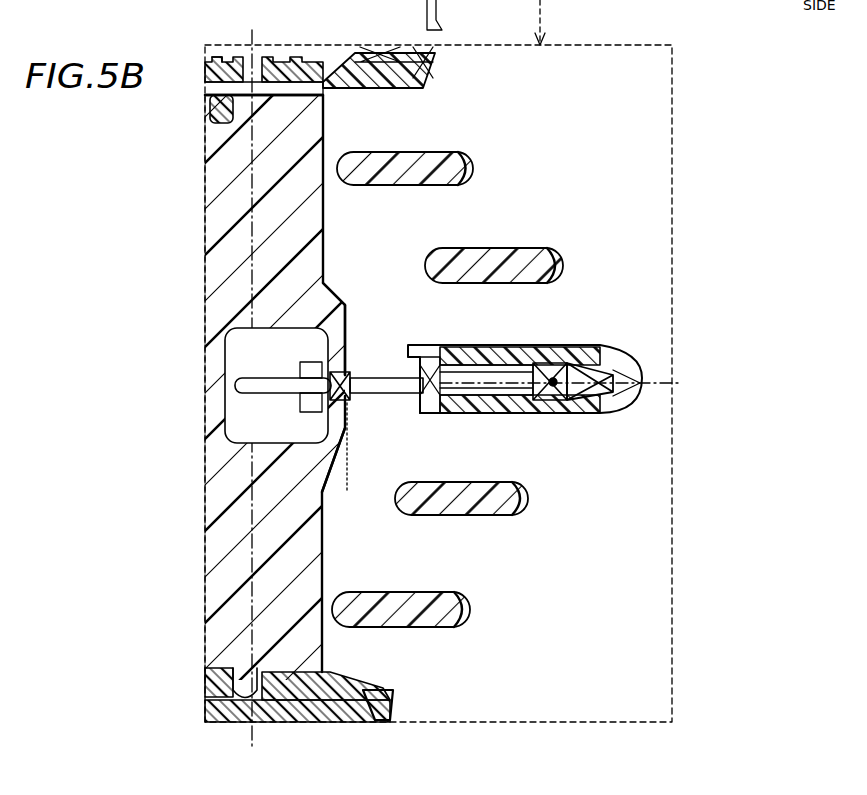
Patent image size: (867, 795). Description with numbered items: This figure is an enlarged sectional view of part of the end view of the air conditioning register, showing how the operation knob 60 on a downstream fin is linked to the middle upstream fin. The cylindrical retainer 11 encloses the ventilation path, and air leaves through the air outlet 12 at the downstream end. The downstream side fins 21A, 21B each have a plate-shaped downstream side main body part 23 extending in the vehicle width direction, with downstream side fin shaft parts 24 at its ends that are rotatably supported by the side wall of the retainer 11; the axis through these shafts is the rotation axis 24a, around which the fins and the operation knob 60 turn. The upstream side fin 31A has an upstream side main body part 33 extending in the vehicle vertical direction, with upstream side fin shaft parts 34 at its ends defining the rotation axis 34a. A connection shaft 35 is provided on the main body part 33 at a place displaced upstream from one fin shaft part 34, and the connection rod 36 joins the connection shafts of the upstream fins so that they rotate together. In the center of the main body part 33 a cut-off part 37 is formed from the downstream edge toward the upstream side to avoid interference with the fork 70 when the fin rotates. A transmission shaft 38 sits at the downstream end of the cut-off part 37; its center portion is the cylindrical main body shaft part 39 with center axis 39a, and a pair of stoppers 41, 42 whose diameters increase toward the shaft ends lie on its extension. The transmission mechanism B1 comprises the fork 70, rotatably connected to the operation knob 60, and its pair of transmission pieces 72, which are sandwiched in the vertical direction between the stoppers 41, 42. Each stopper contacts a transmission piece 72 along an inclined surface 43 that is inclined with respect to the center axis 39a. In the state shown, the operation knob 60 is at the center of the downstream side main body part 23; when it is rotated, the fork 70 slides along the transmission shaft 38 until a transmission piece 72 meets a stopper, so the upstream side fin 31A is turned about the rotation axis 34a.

The retainer 11 is at (287, 60).
The air outlet 12 is at (405, 90).
The downstream side main body part 23 is at (487, 389).
The downstream side fin 21A is at (522, 328).
The downstream side fin 21B is at (445, 180).
The downstream side fin shaft part 24 is at (447, 160).
The rotation axis of the downstream side fins 24a is at (582, 384).
The upstream side fin 31A is at (199, 268).
The upstream side main body part 33 is at (217, 178).
The upstream side fin shaft part 34 is at (240, 58).
The rotation axis of the upstream side fins 34a is at (250, 603).
The connection shaft 35 is at (205, 107).
The connection rod 36 is at (208, 93).
The cut-off part 37 is at (226, 359).
The transmission shaft 38 is at (366, 296).
The main body shaft part 39 is at (307, 393).
The center axis of the main body shaft part 39a is at (346, 475).
The stopper 41 is at (352, 362).
The stopper 42 is at (350, 430).
The inclined surface 43 is at (318, 375).
The operation knob 60 is at (598, 412).
The fork 70 is at (400, 394).
The transmission piece 72 is at (266, 394).
The transmission mechanism B1 is at (425, 440).